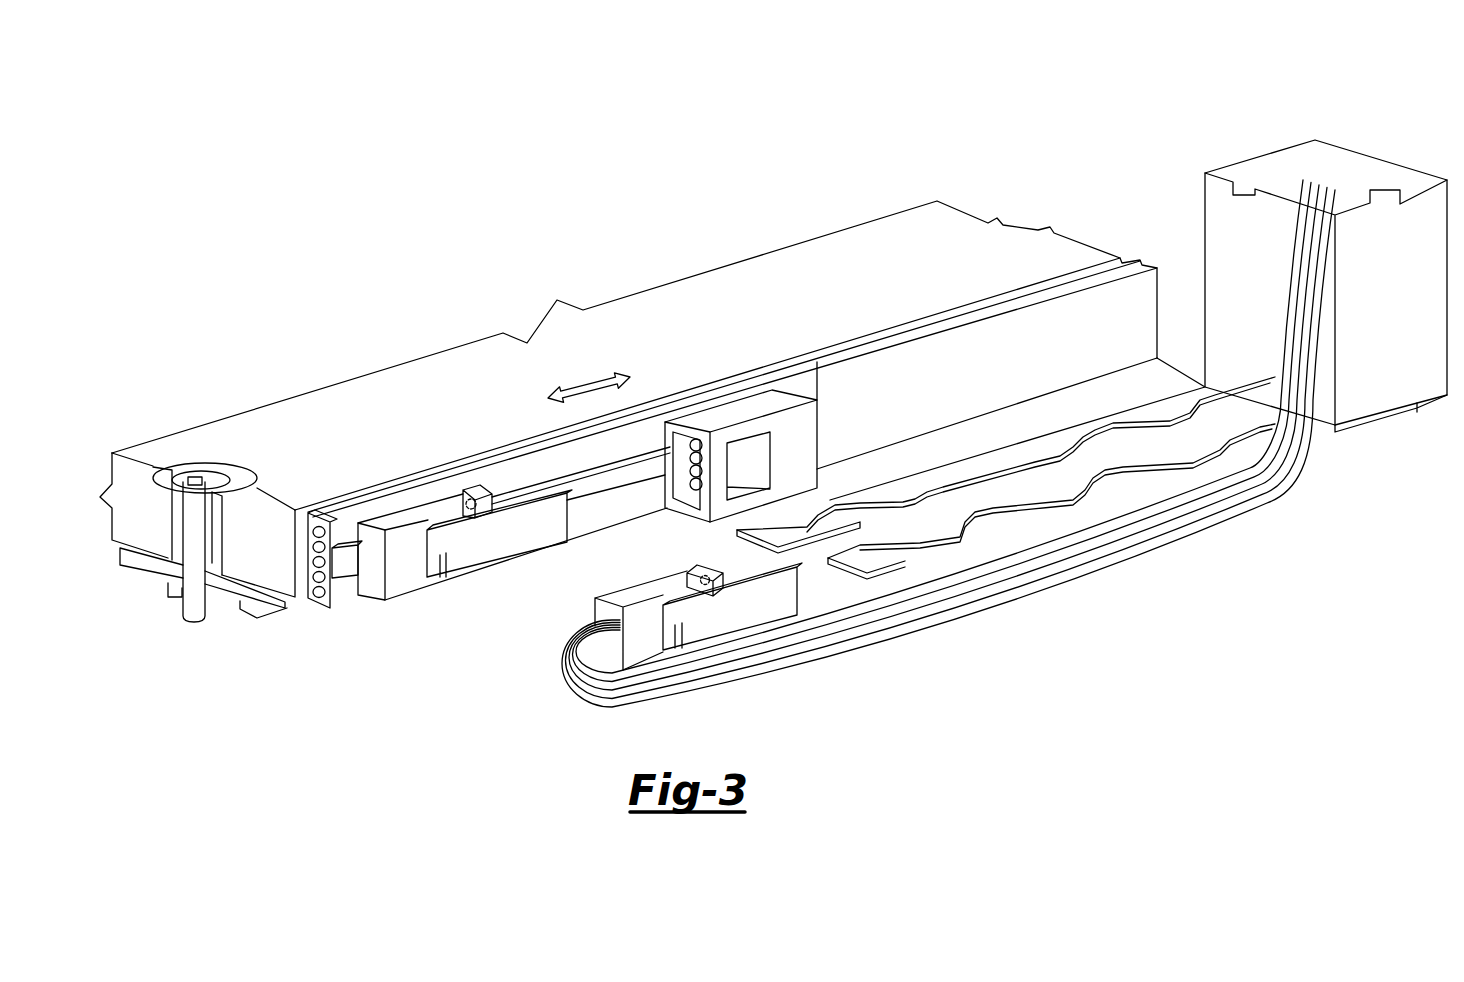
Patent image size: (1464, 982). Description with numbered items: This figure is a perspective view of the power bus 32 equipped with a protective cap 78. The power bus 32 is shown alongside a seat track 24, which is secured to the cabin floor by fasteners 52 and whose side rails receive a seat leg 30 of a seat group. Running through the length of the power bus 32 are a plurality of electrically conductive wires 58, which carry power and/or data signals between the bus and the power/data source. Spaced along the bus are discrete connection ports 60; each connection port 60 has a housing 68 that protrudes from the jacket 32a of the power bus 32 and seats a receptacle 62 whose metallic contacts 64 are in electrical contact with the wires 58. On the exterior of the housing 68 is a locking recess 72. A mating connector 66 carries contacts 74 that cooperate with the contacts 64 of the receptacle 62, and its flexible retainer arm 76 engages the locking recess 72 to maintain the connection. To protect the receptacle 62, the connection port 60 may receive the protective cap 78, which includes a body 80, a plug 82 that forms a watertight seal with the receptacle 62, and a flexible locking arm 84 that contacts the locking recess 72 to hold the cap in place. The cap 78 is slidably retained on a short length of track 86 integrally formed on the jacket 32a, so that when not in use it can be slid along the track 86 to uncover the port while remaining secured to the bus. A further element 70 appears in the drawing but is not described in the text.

The seat track 24 is at (730, 546).
The seat leg 30 is at (1240, 194).
The power bus 32 is at (652, 421).
The jacket 32a is at (308, 598).
The fasteners 52 is at (190, 477).
The electrically conductive wires 58 is at (317, 548).
The connection port 60 is at (735, 418).
The receptacle 62 is at (668, 448).
The metallic contacts 64 is at (693, 474).
The connector 66 is at (718, 621).
The housing 68 is at (808, 474).
The housing front wall 70 is at (920, 350).
The locking recess 72 is at (773, 441).
The contacts 74 is at (704, 576).
The flexible retainer arm 76 is at (753, 617).
The protective cap 78 is at (492, 551).
The body 80 is at (390, 520).
The plug 82 is at (468, 500).
The flexible locking arm 84 is at (498, 553).
The track 86 is at (347, 578).